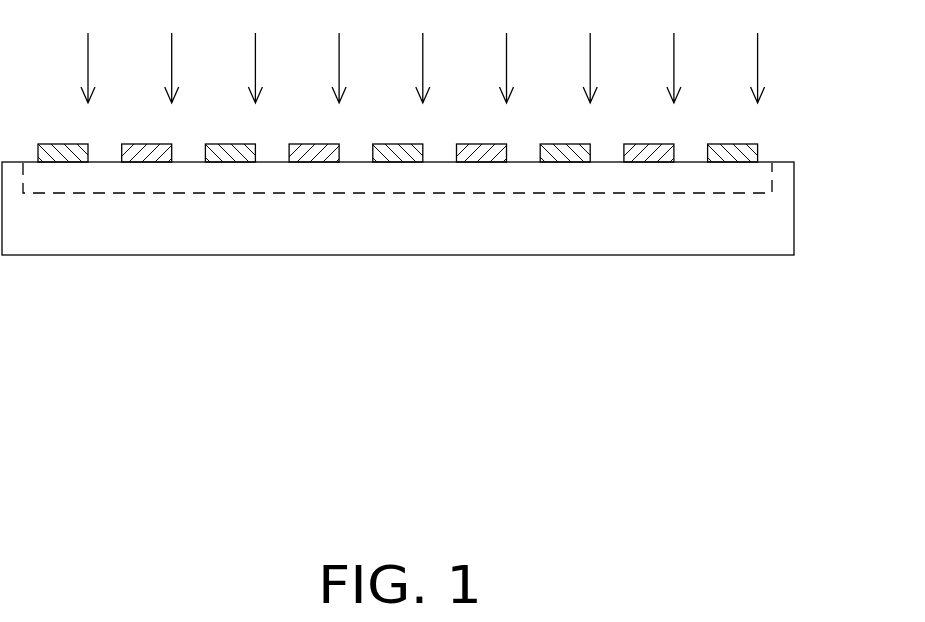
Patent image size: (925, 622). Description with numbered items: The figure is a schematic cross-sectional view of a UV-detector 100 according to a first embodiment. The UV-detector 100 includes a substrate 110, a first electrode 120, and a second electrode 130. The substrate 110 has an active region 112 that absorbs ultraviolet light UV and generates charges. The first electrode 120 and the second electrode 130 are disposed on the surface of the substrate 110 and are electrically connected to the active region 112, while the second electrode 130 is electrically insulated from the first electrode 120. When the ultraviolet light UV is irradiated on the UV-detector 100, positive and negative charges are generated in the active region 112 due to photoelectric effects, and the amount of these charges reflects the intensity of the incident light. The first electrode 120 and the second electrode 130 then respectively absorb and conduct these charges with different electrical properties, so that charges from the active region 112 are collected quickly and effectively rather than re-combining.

The UV-detector 100 is at (446, 187).
The substrate 110 is at (745, 225).
The active region 112 is at (187, 193).
The first electrode 120 is at (731, 147).
The second electrode 130 is at (640, 147).
The ultraviolet light UV is at (760, 53).